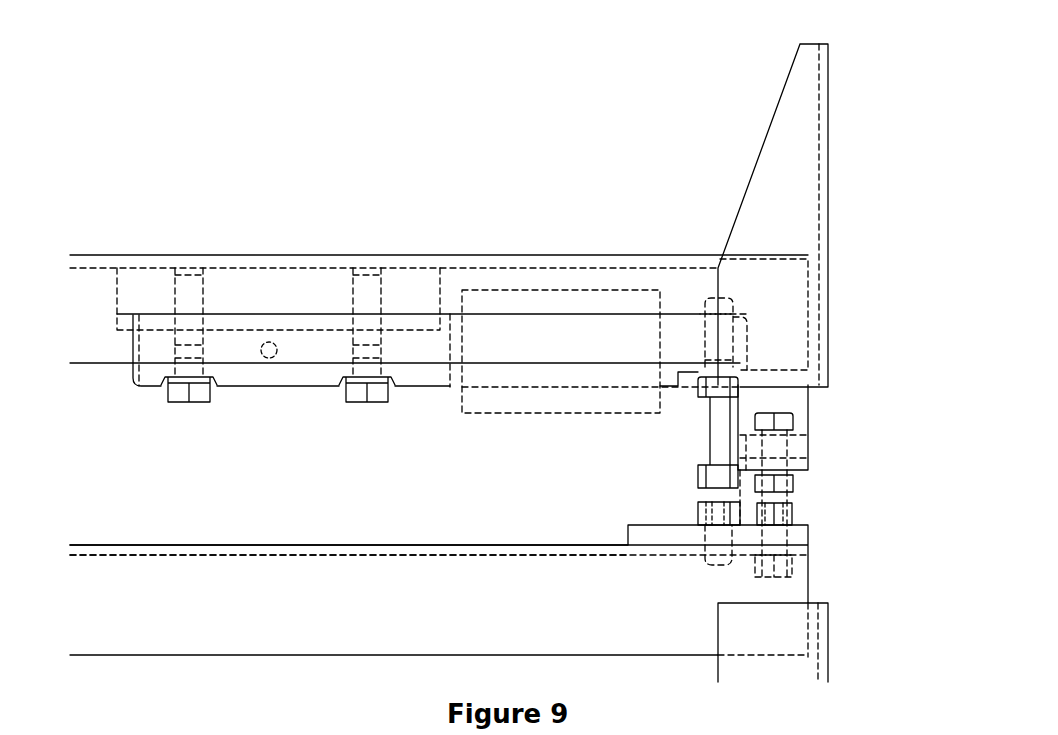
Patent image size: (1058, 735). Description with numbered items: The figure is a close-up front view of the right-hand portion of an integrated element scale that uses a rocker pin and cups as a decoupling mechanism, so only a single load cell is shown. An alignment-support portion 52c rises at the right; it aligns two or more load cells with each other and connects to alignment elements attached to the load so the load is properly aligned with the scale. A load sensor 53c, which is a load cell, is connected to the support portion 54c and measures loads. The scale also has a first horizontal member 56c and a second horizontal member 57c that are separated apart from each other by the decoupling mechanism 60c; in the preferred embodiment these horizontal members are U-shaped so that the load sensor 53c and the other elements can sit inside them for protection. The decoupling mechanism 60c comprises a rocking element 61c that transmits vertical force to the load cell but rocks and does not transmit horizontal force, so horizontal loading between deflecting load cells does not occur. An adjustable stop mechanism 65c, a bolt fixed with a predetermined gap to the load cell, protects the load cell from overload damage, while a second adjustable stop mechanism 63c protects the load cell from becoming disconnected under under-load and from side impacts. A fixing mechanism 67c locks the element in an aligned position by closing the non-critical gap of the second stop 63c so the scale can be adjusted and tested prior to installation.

The alignment-support portion 52c is at (812, 172).
The load sensor 53c is at (490, 413).
The support portion 54c is at (520, 545).
The first horizontal member 56c is at (312, 266).
The second horizontal member 57c is at (262, 565).
The decoupling mechanism 60c is at (845, 383).
The rocking element 61c is at (712, 440).
The second adjustable stop mechanism 63c is at (800, 413).
The adjustable stop mechanism 65c is at (794, 483).
The fixing mechanism 67c is at (794, 500).